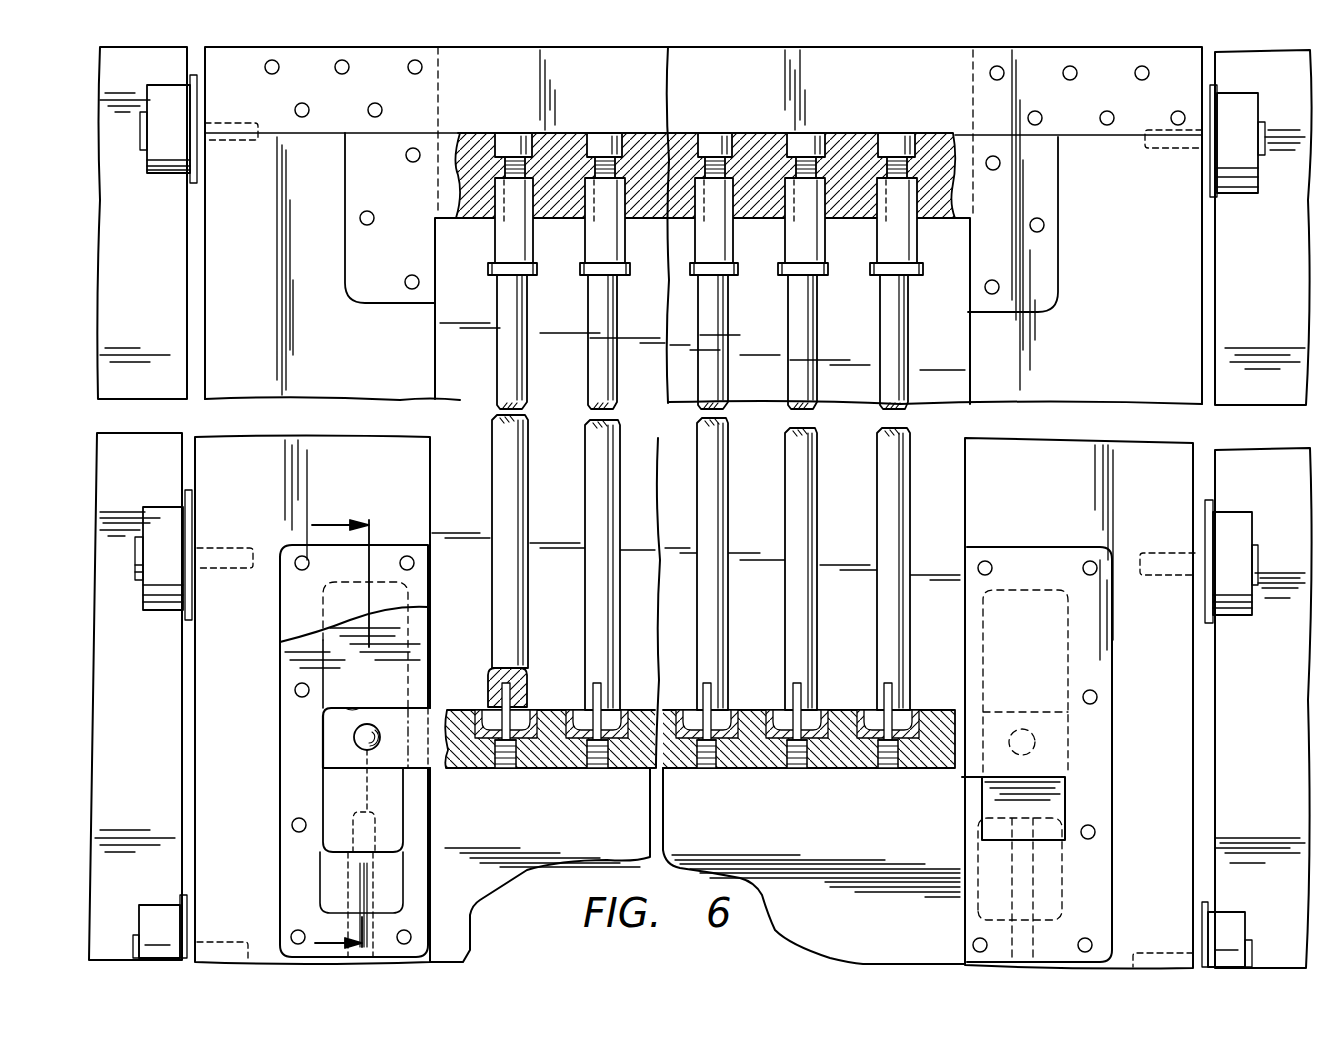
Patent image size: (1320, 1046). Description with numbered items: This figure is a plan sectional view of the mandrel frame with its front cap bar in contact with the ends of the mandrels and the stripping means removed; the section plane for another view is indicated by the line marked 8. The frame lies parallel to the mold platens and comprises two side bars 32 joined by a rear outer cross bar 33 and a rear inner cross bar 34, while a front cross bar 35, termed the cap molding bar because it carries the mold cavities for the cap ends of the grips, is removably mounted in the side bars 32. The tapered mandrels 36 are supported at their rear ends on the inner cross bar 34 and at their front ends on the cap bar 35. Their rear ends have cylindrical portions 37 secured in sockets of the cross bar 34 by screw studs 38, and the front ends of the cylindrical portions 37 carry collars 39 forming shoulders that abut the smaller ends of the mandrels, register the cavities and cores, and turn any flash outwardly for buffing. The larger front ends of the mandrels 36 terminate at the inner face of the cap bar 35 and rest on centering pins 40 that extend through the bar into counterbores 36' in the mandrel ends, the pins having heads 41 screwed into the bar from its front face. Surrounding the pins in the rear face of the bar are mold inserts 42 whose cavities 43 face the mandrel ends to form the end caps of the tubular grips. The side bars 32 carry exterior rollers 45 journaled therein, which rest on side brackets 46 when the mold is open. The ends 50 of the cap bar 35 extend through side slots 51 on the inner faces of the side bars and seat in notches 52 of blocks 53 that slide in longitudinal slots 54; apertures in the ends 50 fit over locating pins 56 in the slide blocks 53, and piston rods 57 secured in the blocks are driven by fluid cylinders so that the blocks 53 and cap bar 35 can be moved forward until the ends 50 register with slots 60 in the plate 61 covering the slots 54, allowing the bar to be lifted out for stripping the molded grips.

The section line 8 is at (340, 723).
The side bars 32 is at (267, 266).
The rear outer cross bar 33 is at (764, 103).
The rear inner cross bar 34 is at (572, 148).
The front cross bar 35 is at (745, 770).
The mandrels 36 is at (698, 562).
The counterbores 36' is at (482, 687).
The cylindrical portions 37 is at (500, 237).
The screw studs 38 is at (518, 140).
The collars 39 is at (580, 272).
The centering pins 40 is at (515, 690).
The heads 41 is at (510, 768).
The mold inserts 42 is at (497, 758).
The cavities 43 is at (535, 715).
The rollers 45 is at (166, 175).
The side brackets 46 is at (152, 785).
The ends of the cap bar 50 is at (335, 742).
The side slots 51 is at (410, 840).
The notches 52 is at (352, 710).
The blocks 53 is at (335, 790).
The slots 54 is at (330, 668).
The locating pins 56 is at (355, 742).
The piston rods 57 is at (357, 888).
The slots 60 is at (1062, 780).
The plate 61 is at (295, 594).